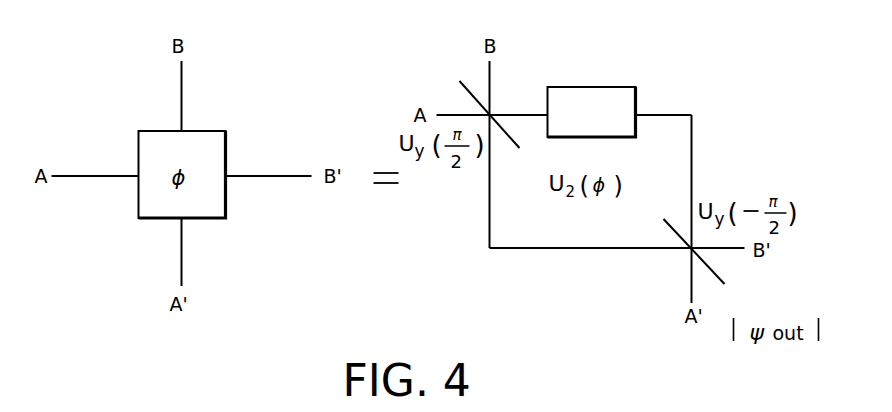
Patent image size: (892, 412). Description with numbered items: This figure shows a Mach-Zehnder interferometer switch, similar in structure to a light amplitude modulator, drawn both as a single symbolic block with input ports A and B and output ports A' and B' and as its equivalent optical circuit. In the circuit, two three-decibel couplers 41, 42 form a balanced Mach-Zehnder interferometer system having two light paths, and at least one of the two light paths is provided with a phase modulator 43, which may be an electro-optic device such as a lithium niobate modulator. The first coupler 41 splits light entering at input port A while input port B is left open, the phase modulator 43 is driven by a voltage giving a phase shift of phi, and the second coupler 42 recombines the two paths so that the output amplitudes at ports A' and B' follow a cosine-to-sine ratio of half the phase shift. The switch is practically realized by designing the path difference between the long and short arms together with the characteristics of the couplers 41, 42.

The 3 dB coupler 41 is at (465, 85).
The 3 dB coupler 42 is at (665, 223).
The phase modulator 43 is at (613, 86).